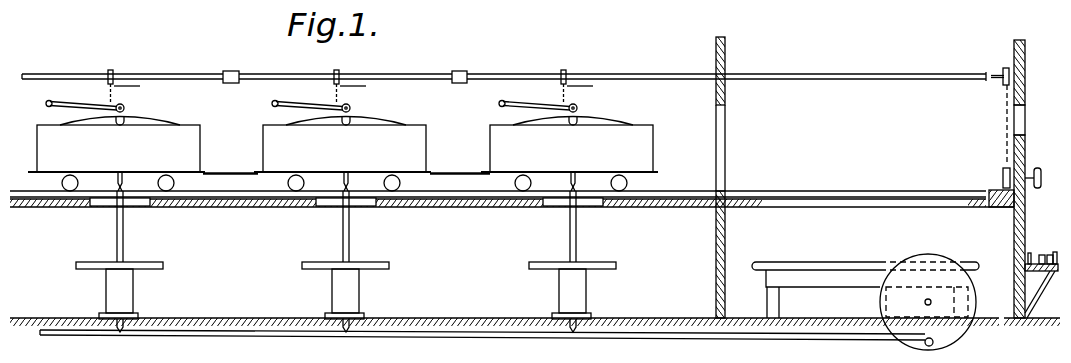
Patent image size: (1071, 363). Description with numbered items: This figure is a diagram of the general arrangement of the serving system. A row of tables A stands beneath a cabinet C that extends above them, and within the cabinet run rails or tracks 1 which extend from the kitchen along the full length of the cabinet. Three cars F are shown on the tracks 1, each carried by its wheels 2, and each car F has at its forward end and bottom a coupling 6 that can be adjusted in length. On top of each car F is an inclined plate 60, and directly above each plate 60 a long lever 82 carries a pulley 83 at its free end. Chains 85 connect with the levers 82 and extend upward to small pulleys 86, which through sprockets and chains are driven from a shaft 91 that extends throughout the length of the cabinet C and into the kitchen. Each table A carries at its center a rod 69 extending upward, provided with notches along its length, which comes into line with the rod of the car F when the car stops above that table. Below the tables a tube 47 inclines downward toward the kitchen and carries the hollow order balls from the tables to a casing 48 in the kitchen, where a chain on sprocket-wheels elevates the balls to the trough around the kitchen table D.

The rails or tracks 1 is at (251, 190).
The wheels 2 is at (62, 183).
The coupling 6 is at (229, 173).
The tube 47 is at (525, 338).
The casing 48 is at (928, 302).
The inclined plate 60 is at (140, 122).
The rod 69 is at (124, 233).
The lever 82 is at (86, 105).
The pulley 83 is at (350, 101).
The chain 85 is at (363, 88).
The small pulley 86 is at (337, 79).
The shaft 91 is at (915, 73).
The car F is at (343, 158).
The table A is at (346, 297).
The cabinet C is at (588, 177).
The kitchen table D is at (865, 280).